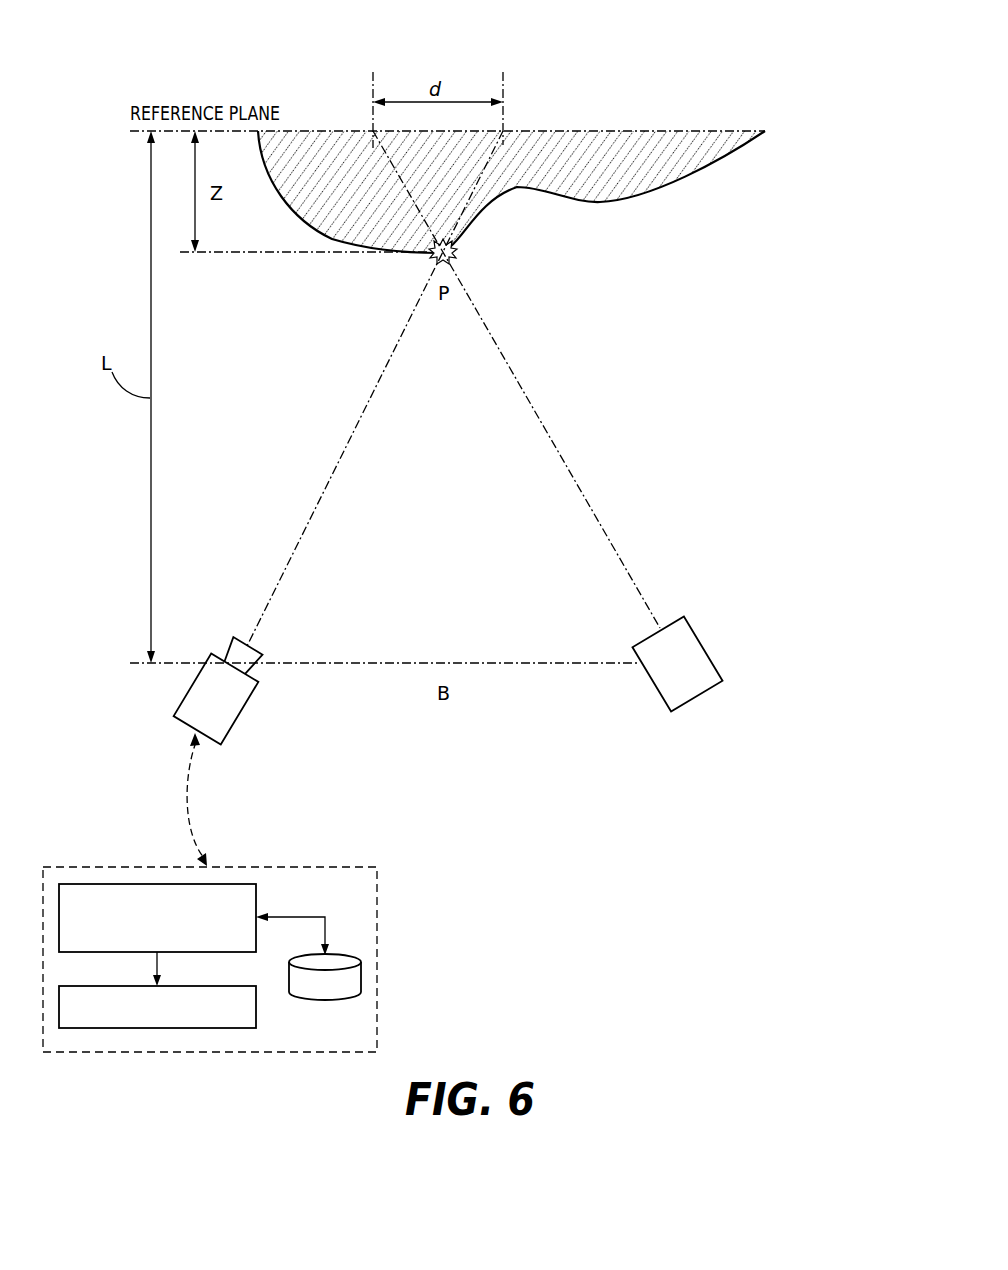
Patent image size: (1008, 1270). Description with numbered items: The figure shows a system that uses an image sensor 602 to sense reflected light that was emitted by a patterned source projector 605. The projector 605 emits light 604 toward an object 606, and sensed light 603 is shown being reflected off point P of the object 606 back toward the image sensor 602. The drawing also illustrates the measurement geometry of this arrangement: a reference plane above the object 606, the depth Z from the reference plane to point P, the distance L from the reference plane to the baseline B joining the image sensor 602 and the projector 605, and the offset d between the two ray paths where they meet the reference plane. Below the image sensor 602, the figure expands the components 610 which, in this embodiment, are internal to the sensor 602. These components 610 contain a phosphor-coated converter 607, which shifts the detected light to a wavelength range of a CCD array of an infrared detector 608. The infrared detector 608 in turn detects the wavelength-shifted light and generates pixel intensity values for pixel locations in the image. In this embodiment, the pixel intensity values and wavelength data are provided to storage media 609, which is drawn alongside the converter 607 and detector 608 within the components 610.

The image sensor 602 is at (243, 710).
The sensed light 603 is at (302, 527).
The emitted light 604 is at (601, 527).
The patterned source projector 605 is at (703, 648).
The object 606 is at (474, 236).
The phosphor-coated converter 607 is at (257, 900).
The infrared detector 608 is at (257, 1005).
The storage media 609 is at (342, 955).
The components 610 is at (252, 959).